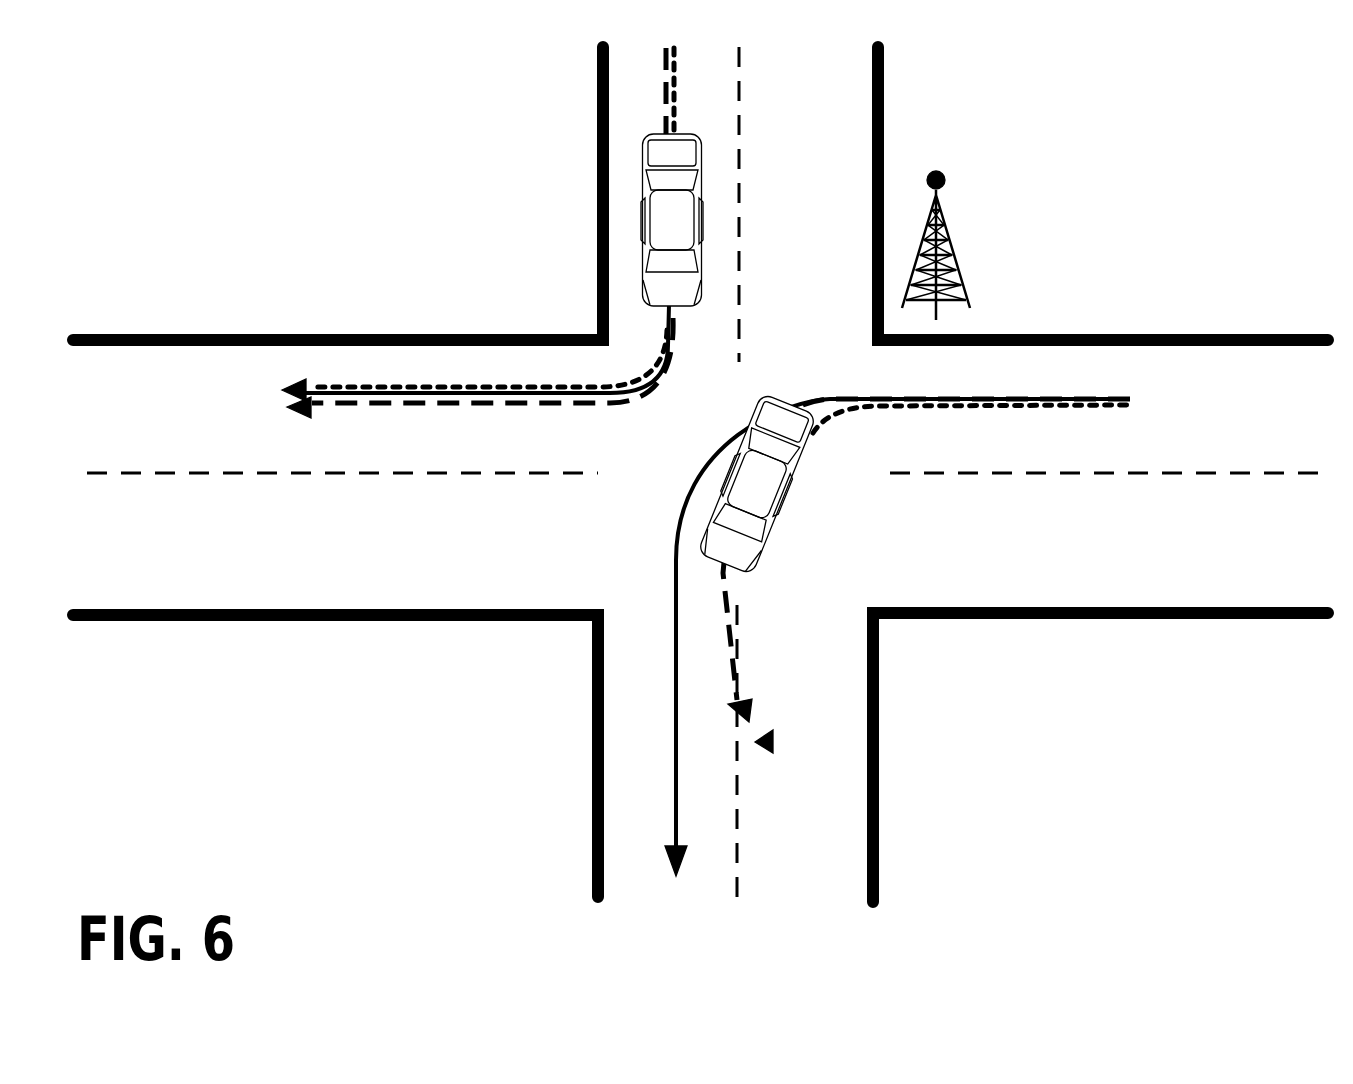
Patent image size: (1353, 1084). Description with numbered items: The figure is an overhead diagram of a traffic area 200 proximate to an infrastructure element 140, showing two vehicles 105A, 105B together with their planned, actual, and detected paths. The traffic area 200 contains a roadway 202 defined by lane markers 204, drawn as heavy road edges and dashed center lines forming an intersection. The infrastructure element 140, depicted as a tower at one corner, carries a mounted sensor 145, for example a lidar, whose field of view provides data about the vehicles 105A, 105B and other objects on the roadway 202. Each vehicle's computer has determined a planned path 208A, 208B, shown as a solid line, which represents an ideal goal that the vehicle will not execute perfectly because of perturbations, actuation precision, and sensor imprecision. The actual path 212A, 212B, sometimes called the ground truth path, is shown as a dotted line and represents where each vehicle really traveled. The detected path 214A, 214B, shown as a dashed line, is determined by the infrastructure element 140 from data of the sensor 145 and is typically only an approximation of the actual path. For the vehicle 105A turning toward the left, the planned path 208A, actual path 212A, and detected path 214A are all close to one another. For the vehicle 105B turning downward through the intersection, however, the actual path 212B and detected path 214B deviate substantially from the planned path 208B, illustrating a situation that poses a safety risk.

The traffic area 200 is at (138, 97).
The roadway 202 is at (176, 571).
The lane markers 204 is at (598, 206).
The vehicle 105A is at (694, 285).
The vehicle 105B is at (764, 548).
The infrastructure element 140 is at (955, 268).
The sensor 145 is at (946, 184).
The planned path 208A is at (608, 389).
The planned path 208B is at (672, 580).
The actual path 212A is at (385, 384).
The actual path 212B is at (940, 410).
The detected path 214A is at (655, 380).
The detected path 214B is at (760, 706).